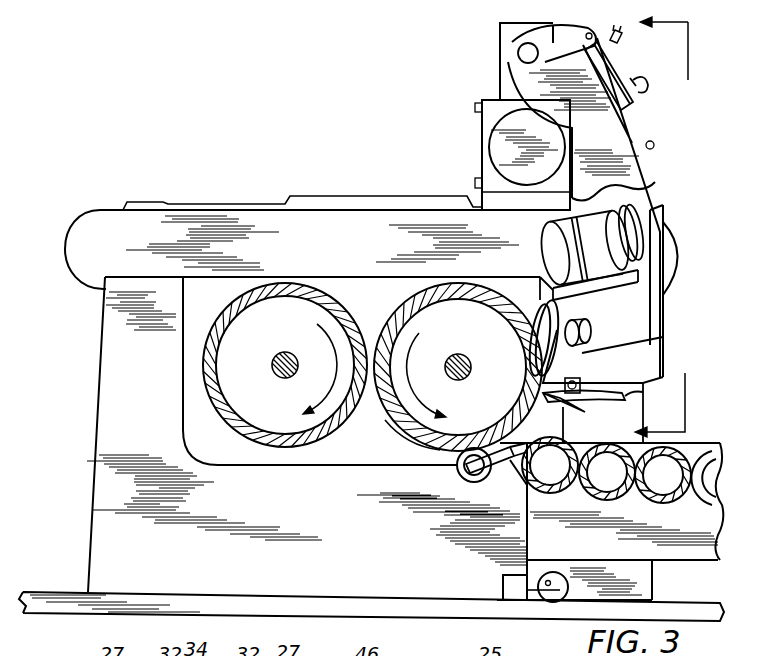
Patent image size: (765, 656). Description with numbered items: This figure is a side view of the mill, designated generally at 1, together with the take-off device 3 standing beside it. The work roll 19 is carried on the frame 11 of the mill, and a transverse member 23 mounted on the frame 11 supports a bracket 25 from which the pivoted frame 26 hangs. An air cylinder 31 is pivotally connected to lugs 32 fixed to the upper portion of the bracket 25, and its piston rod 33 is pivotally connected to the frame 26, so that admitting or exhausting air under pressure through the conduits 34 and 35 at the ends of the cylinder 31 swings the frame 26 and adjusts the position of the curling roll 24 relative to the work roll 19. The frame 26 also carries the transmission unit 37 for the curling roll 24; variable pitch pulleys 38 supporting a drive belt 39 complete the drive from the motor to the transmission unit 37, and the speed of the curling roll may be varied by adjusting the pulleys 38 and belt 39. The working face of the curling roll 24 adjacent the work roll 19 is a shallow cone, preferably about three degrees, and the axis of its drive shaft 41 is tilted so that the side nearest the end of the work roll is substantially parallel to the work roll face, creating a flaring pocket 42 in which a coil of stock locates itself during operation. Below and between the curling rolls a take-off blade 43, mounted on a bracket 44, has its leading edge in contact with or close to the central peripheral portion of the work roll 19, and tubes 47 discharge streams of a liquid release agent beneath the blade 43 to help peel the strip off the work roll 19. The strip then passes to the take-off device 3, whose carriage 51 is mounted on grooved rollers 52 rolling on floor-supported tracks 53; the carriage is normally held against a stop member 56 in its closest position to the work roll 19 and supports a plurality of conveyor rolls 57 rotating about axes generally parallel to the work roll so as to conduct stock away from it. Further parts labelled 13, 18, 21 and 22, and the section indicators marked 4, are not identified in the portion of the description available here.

The grinding machine 1 is at (101, 336).
The take-off device 3 is at (693, 438).
The frame 11 is at (97, 518).
The housing 13 is at (238, 218).
The grinding wheel 18 is at (290, 283).
The work roll 19 is at (410, 292).
The wheel guard 21 is at (370, 350).
The motor housing 22 is at (482, 163).
The transverse member 23 is at (492, 140).
The curling roll 24 is at (537, 297).
The bracket 25 is at (506, 33).
The pivoted frame 26 is at (594, 152).
The air cylinder 31 is at (625, 62).
The lugs 32 is at (520, 46).
The piston rod 33 is at (650, 122).
The conduit 34 is at (620, 38).
The conduit 35 is at (645, 88).
The transmission unit 37 is at (627, 340).
The variable pitch pulleys 38 is at (637, 232).
The drive belt 39 is at (665, 290).
The drive shaft 41 is at (581, 330).
The pocket 42 is at (527, 319).
The take-off blade 43 is at (553, 403).
The bracket 44 is at (655, 363).
The tubes 47 is at (645, 401).
The carriage 51 is at (720, 446).
The grooved rollers 52 is at (560, 602).
The tracks 53 is at (700, 602).
The stop member 56 is at (503, 586).
The conveyor rolls 57 is at (682, 502).
The section line 4- 4 is at (651, 229).